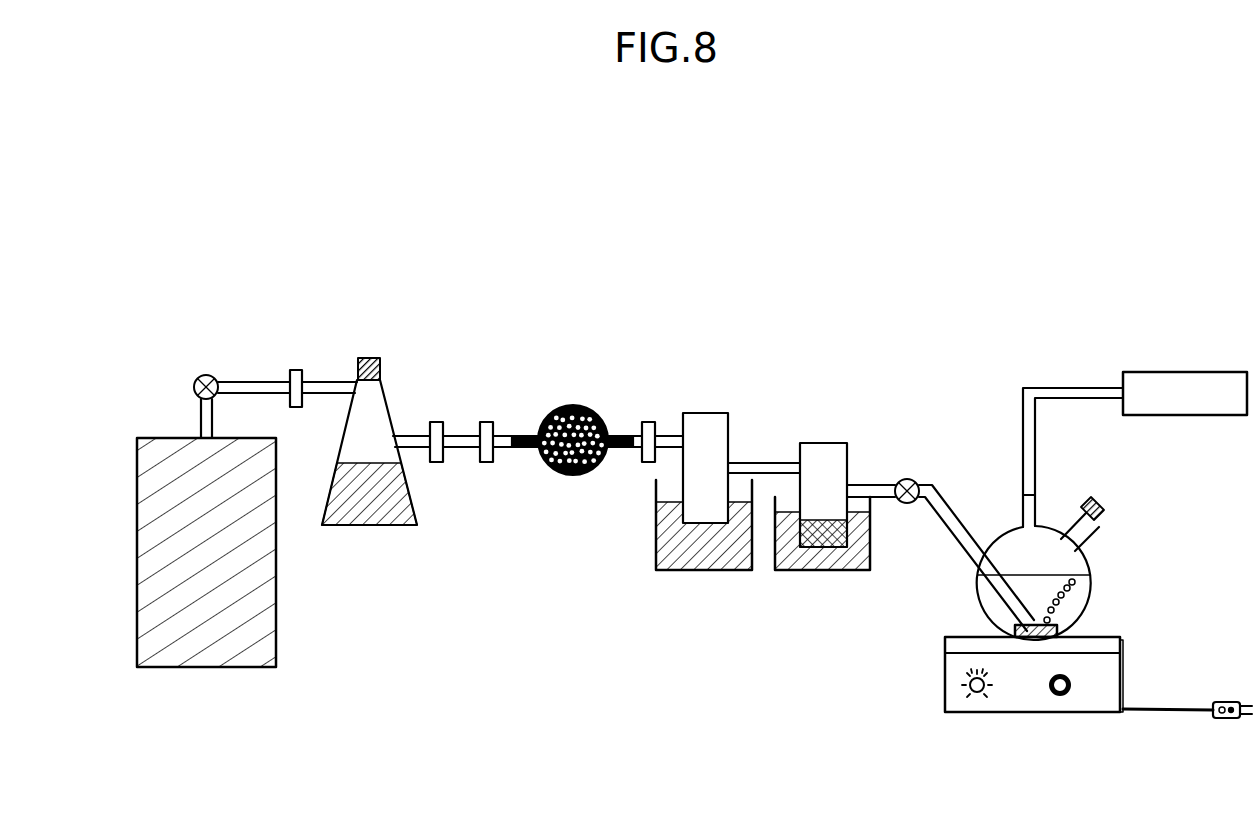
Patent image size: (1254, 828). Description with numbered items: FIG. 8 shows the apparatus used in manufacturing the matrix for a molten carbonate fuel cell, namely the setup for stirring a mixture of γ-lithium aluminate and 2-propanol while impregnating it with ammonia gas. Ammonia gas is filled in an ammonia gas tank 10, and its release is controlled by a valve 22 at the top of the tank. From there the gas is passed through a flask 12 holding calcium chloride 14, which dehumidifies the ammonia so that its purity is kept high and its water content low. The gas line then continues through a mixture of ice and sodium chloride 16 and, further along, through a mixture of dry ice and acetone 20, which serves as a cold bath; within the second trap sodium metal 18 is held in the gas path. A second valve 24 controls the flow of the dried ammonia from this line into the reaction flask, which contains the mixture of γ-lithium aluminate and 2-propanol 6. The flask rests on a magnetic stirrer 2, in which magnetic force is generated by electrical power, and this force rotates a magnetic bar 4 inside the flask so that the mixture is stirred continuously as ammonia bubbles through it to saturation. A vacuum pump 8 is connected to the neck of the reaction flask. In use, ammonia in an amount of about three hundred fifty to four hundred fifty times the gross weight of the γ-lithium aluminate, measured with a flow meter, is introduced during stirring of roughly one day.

The magnetic stirrer 2 is at (1110, 648).
The magnetic bar 4 is at (1013, 628).
The mixture of γ-lithium aluminate and 2-propanol 6 is at (1077, 598).
The vacuum pump 8 is at (1150, 387).
The ammonia gas tank 10 is at (264, 644).
The flask holding calcium chloride 12 is at (378, 510).
The calcium chloride 14 is at (581, 476).
The mixture of ice and sodium chloride 16 is at (707, 548).
The sodium metal 18 is at (821, 518).
The mixture of dry ice and acetone 20 is at (832, 568).
The valve 22 is at (211, 377).
The valve 24 is at (908, 479).